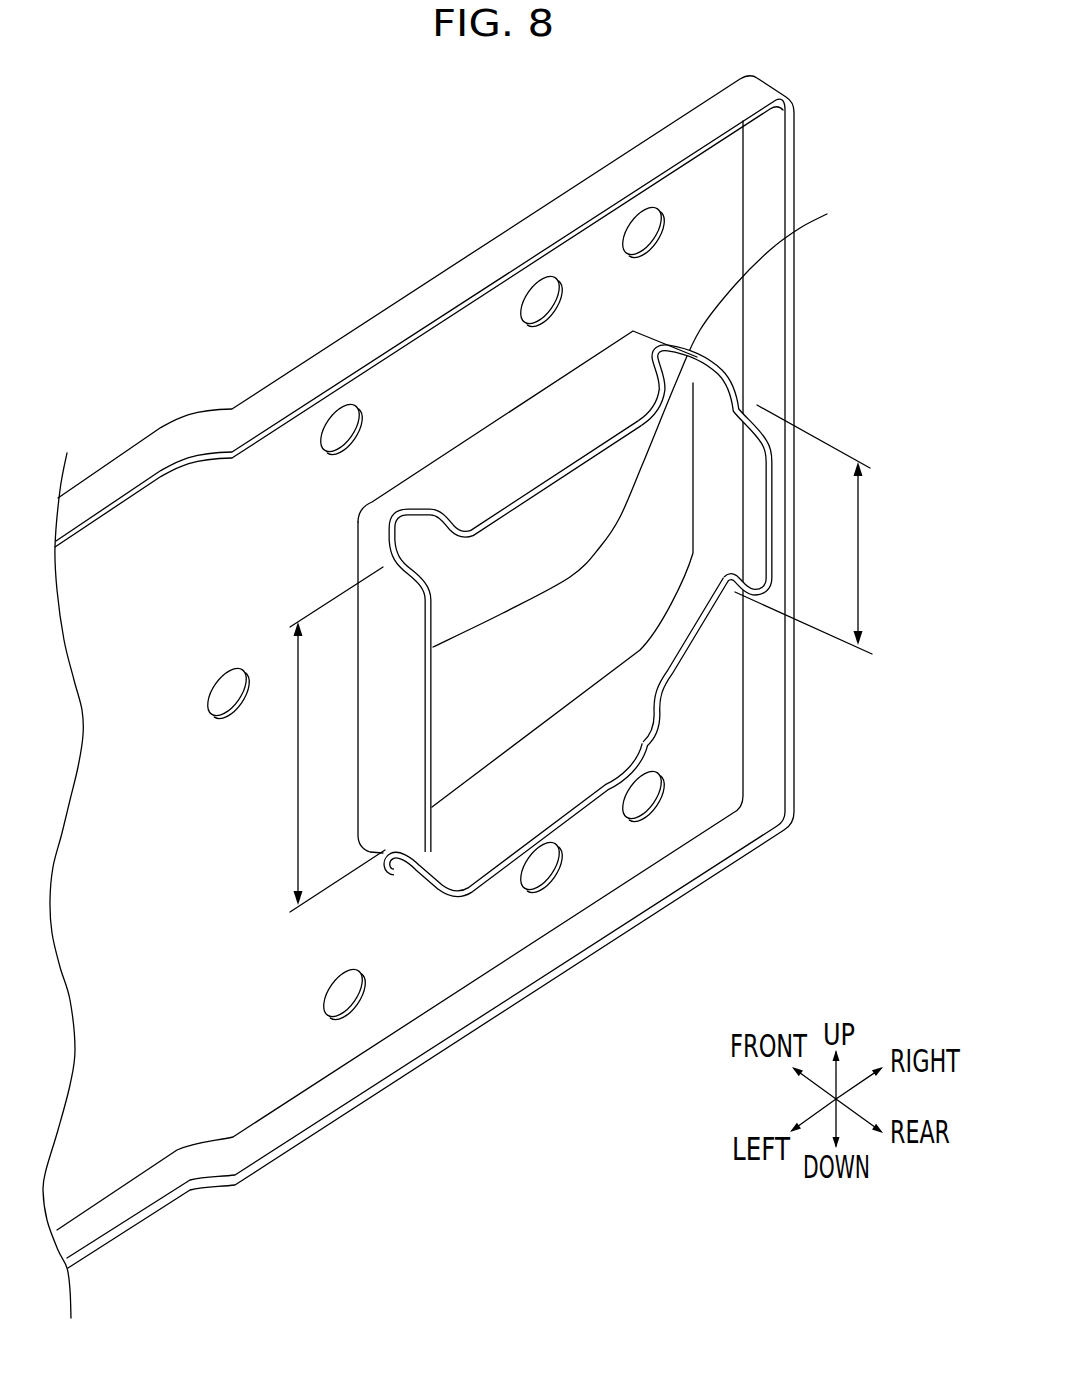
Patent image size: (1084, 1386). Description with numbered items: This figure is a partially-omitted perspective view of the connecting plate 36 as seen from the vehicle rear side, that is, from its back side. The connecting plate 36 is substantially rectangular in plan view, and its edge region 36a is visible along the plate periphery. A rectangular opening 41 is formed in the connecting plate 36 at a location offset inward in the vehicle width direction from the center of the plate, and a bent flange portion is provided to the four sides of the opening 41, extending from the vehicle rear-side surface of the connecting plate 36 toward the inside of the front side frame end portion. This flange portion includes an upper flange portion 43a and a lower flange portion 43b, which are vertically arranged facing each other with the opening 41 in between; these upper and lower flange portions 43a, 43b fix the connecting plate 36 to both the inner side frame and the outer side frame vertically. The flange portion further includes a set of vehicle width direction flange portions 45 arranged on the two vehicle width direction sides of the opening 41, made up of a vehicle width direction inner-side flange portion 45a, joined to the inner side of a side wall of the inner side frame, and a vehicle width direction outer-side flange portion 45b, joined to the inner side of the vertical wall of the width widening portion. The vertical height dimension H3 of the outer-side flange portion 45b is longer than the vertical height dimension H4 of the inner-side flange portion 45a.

The connecting plate 36 is at (406, 273).
The upper edge flange of plate 36a is at (627, 150).
The opening 41 is at (649, 577).
The upper flange portion 43a is at (566, 478).
The lower flange portion 43b is at (578, 815).
The vehicle width direction flange portions 45 is at (686, 421).
The vehicle width direction inner-side flange portion 45a is at (767, 458).
The vehicle width direction outer-side flange portion 45b is at (527, 650).
The vertical height dimension of the vehicle width direction outer-side flange porti H3 is at (321, 739).
The vertical height dimension of the vehicle width direction inner-side flange porti H4 is at (817, 529).